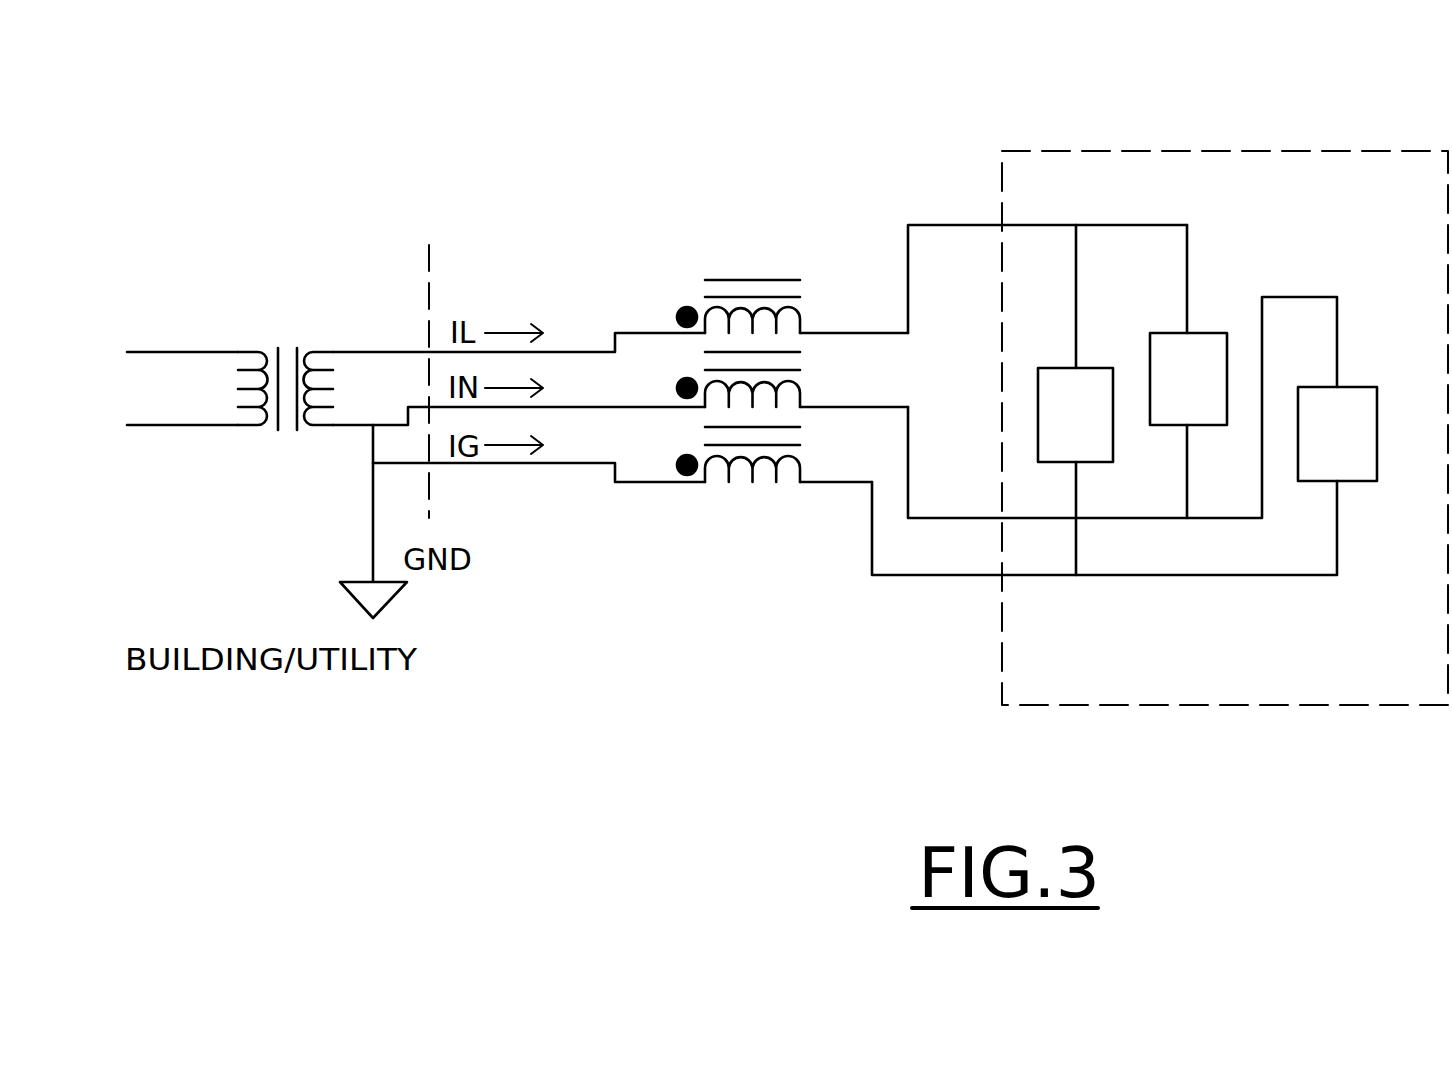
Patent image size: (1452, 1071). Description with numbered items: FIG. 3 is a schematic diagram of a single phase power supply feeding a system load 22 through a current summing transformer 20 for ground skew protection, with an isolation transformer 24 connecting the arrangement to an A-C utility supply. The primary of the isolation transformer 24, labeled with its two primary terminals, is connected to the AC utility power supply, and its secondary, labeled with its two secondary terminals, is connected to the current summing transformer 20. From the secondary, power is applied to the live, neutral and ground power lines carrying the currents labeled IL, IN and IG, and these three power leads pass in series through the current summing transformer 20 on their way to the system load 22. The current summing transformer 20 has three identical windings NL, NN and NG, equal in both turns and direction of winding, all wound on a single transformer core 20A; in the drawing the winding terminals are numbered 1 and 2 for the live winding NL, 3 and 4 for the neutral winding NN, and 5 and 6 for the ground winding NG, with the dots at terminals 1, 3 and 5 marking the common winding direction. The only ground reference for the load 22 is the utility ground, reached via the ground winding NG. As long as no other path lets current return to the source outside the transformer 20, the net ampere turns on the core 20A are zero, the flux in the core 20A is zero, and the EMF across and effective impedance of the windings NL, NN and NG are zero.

The line winding input terminal 1 is at (652, 317).
The line winding output terminal 2 is at (854, 322).
The neutral winding input terminal 3 is at (652, 389).
The neutral winding output terminal 4 is at (854, 389).
The ground winding input terminal 5 is at (651, 450).
The ground winding output terminal 6 is at (836, 463).
The current summing transformer 20 is at (757, 333).
The transformer core 20A is at (771, 268).
The system load 22 is at (1210, 92).
The isolation transformer 24 is at (283, 312).